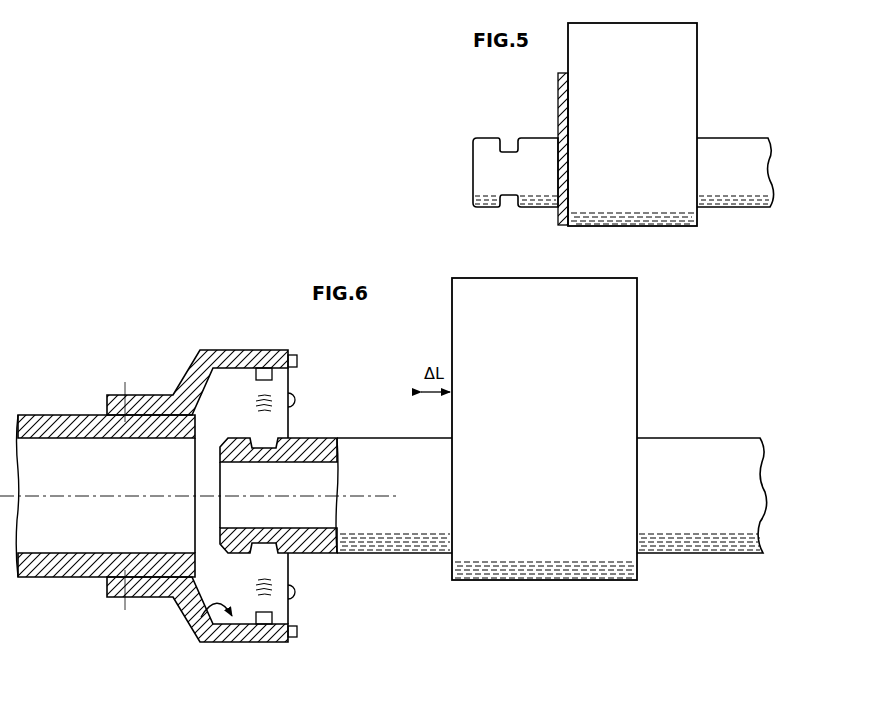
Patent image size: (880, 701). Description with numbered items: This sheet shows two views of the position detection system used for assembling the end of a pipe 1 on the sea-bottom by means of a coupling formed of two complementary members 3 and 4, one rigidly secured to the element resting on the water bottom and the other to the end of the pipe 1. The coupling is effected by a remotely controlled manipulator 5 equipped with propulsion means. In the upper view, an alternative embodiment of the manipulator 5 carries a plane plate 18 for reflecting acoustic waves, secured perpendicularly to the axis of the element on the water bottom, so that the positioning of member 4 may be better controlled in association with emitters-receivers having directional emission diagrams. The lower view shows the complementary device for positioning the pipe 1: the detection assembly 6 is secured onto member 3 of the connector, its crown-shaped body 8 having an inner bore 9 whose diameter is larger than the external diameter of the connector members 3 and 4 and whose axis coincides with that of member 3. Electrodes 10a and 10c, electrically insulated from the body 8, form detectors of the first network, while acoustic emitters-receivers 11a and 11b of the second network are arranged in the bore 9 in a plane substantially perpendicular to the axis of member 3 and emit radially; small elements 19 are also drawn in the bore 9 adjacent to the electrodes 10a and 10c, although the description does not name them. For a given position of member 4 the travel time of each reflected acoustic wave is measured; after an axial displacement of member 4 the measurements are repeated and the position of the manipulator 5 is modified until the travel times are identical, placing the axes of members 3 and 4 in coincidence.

In FIG. 5, the pipe 1 is at (745, 143).
In FIG. 6, the pipe 1 is at (678, 438).
In FIG. 6, the complementary member of the coupling 3 is at (75, 563).
In FIG. 5, the complementary member of the coupling 4 is at (522, 143).
In FIG. 6, the complementary member of the coupling 4 is at (405, 548).
In FIG. 5, the manipulator 5 is at (683, 113).
In FIG. 6, the manipulator 5 is at (638, 360).
In FIG. 6, the detection assembly 6 is at (168, 288).
In FIG. 6, the body 8 is at (167, 397).
In FIG. 6, the inner bore 9 is at (197, 615).
In FIG. 6, the electrode 10a is at (297, 360).
In FIG. 6, the electrode 10c is at (297, 632).
In FIG. 6, the acoustic wave emitter-receiver 11a is at (296, 400).
In FIG. 6, the acoustic wave emitter-receiver 11b is at (296, 592).
In FIG. 5, the plane plate 18 is at (558, 108).
In FIG. 6, the stop element 19 is at (272, 375).